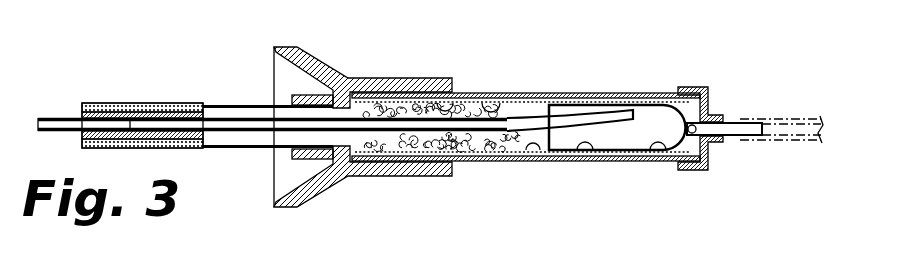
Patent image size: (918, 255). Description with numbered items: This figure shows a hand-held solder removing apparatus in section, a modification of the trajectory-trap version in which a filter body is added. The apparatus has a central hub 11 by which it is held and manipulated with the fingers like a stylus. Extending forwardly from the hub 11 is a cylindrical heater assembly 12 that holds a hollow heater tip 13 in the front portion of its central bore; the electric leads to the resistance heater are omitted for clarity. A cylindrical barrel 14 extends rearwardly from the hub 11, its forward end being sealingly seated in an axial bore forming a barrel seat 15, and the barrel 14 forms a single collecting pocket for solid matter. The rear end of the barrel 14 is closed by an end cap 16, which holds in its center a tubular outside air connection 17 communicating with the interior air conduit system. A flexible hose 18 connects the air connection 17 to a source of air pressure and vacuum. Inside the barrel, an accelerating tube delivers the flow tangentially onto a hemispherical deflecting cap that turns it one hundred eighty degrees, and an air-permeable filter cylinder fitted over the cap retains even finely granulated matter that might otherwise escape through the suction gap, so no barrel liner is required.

The central hub 11 is at (400, 78).
The cylindrical heater assembly 12 is at (144, 103).
The hollow heater tip 13 is at (57, 116).
The cylindrical barrel 14 is at (598, 93).
The barrel seat 15 is at (447, 108).
The end cap 16 is at (712, 100).
The tubular outside air connection 17 is at (733, 118).
The flexible hose 18 is at (777, 141).